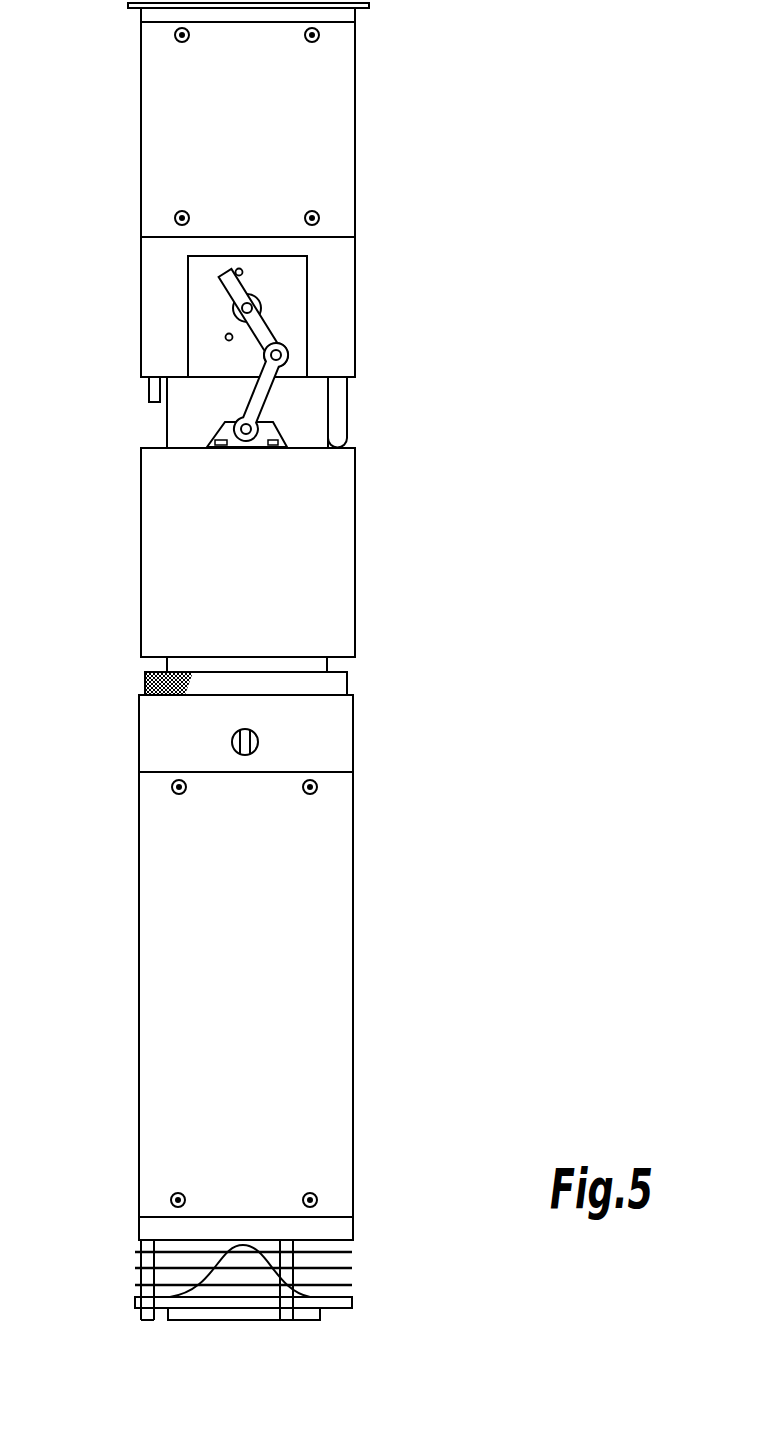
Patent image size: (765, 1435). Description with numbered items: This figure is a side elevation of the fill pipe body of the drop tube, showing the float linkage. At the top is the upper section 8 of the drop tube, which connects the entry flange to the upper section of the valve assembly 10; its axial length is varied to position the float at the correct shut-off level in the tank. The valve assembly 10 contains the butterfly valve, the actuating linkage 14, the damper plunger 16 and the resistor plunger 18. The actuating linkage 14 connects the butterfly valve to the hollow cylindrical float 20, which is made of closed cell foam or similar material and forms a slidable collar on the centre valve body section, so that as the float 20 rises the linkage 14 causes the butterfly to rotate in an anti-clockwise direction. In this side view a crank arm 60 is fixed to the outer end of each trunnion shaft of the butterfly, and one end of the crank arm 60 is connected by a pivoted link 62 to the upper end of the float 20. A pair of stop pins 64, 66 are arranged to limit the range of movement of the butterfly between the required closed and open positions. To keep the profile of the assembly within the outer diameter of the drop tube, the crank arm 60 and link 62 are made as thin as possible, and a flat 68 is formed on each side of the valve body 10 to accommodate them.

The upper section of the drop tube 8 is at (354, 132).
The valve assembly 10 is at (354, 265).
The actuating linkage 14 is at (277, 404).
The damper plunger 16 is at (337, 418).
The resistor plunger 18 is at (149, 392).
The float 20 is at (325, 583).
The crank arm 60 is at (233, 292).
The pivoted link 62 is at (255, 402).
The stop pin 64 is at (239, 268).
The stop pin 66 is at (226, 337).
The flat 68 is at (286, 322).